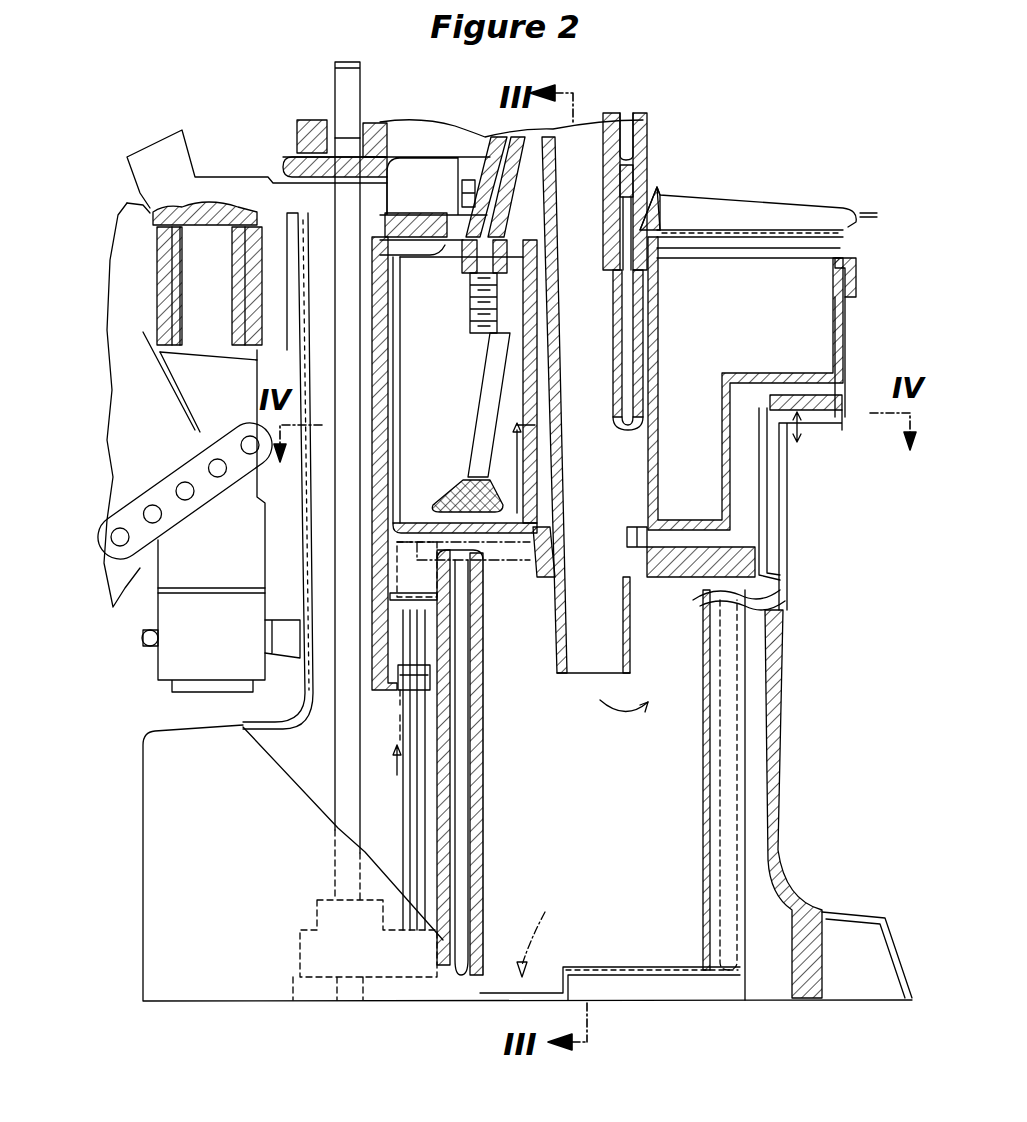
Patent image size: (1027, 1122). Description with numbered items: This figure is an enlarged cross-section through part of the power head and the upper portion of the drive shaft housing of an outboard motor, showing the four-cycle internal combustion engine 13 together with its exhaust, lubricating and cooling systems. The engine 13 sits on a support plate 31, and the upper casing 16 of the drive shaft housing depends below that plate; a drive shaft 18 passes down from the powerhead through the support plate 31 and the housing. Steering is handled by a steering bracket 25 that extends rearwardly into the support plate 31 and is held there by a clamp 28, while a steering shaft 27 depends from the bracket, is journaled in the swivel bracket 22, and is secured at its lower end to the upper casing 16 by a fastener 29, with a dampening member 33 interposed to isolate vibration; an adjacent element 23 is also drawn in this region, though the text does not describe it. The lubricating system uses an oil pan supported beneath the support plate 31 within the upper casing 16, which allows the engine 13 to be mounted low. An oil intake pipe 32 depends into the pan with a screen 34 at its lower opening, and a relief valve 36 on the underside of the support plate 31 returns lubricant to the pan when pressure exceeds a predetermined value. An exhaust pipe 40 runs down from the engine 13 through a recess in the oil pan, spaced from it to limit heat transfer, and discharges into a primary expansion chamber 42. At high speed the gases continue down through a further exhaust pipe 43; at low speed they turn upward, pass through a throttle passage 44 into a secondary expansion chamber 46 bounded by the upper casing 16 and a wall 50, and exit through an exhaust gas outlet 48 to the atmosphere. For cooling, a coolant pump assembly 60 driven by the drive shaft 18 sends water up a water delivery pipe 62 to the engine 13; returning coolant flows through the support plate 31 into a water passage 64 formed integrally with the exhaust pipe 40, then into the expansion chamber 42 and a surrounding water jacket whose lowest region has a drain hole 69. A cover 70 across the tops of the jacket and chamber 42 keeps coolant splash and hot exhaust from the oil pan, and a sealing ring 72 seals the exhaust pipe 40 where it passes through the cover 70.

The four-cycle internal combustion engine 13 is at (643, 122).
The upper casing 16 is at (780, 735).
The drive shaft 18 is at (330, 460).
The swivel bracket 22 is at (167, 567).
The bracket 23 is at (123, 413).
The steering bracket 25 is at (173, 163).
The steering shaft 27 is at (167, 290).
The clamp 28 is at (410, 172).
The fastener 29 is at (150, 640).
The support plate 31 is at (657, 187).
The oil intake pipe 32 is at (473, 407).
The dampening member 33 is at (293, 643).
The screen 34 is at (440, 503).
The relief valve 36 is at (478, 288).
The exhaust pipe 40 is at (633, 633).
The primary expansion chamber 42 is at (536, 812).
The further exhaust pipe 43 is at (590, 997).
The throttle passage 44 is at (753, 607).
The secondary expansion chamber 46 is at (777, 510).
The exhaust gas outlet 48 is at (807, 425).
The wall 50 is at (763, 470).
The coolant pump assembly 60 is at (297, 948).
The water delivery pipe 62 is at (405, 743).
The water passage 64 is at (627, 418).
The drain hole 69 is at (460, 975).
The cover 70 is at (740, 550).
The sealing ring 72 is at (653, 545).